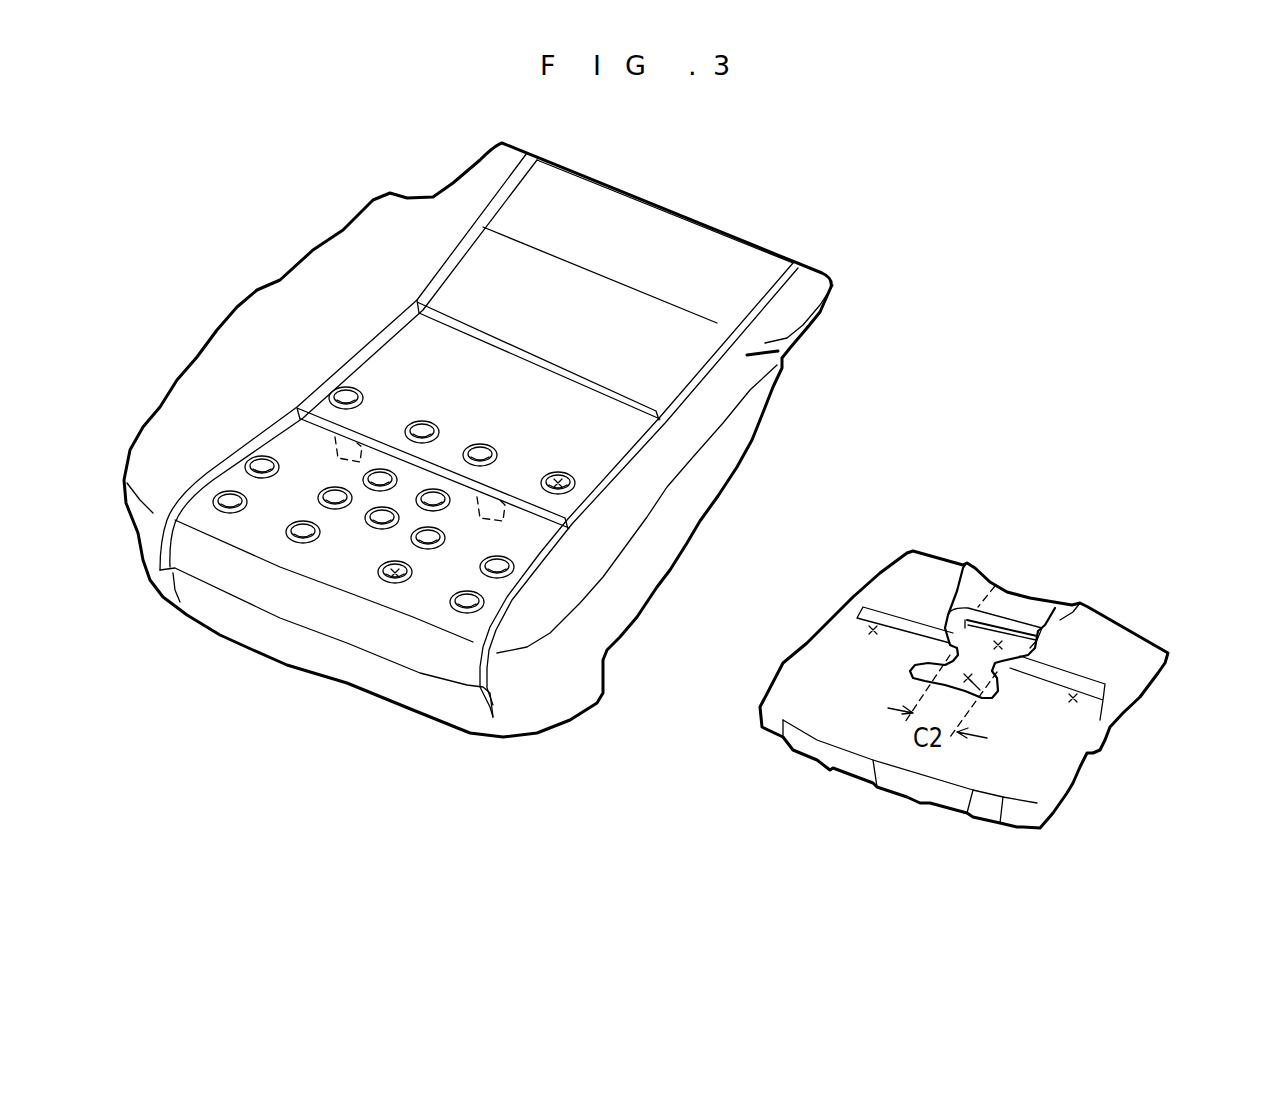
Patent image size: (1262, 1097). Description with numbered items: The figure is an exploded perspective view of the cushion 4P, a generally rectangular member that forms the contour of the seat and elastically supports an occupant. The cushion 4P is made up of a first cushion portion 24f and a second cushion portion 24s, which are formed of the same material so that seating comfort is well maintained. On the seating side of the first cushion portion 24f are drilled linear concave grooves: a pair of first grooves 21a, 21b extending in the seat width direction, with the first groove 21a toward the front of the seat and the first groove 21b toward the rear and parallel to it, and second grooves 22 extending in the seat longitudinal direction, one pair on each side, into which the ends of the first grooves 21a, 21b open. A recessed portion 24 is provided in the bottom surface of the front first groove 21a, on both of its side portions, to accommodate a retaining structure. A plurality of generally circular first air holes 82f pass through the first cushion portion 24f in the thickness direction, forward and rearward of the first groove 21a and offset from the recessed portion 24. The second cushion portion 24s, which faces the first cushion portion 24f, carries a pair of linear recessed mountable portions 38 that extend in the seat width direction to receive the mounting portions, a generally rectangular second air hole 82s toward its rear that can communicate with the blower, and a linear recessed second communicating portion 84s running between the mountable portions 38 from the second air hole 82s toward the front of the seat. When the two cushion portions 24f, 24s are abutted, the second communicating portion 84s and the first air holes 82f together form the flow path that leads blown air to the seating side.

The cushion 4P is at (646, 485).
The first cushion portion 24f is at (832, 271).
The second cushion portion 24s is at (883, 567).
The second grooves 22 is at (207, 473).
The first groove 21a is at (330, 430).
The first groove 21b is at (460, 330).
The recessed portion 24 is at (337, 443).
The first air holes 82f is at (567, 487).
The second air hole 82s is at (998, 645).
The second communicating portion 84s is at (973, 682).
The mountable portion 38 is at (873, 630).